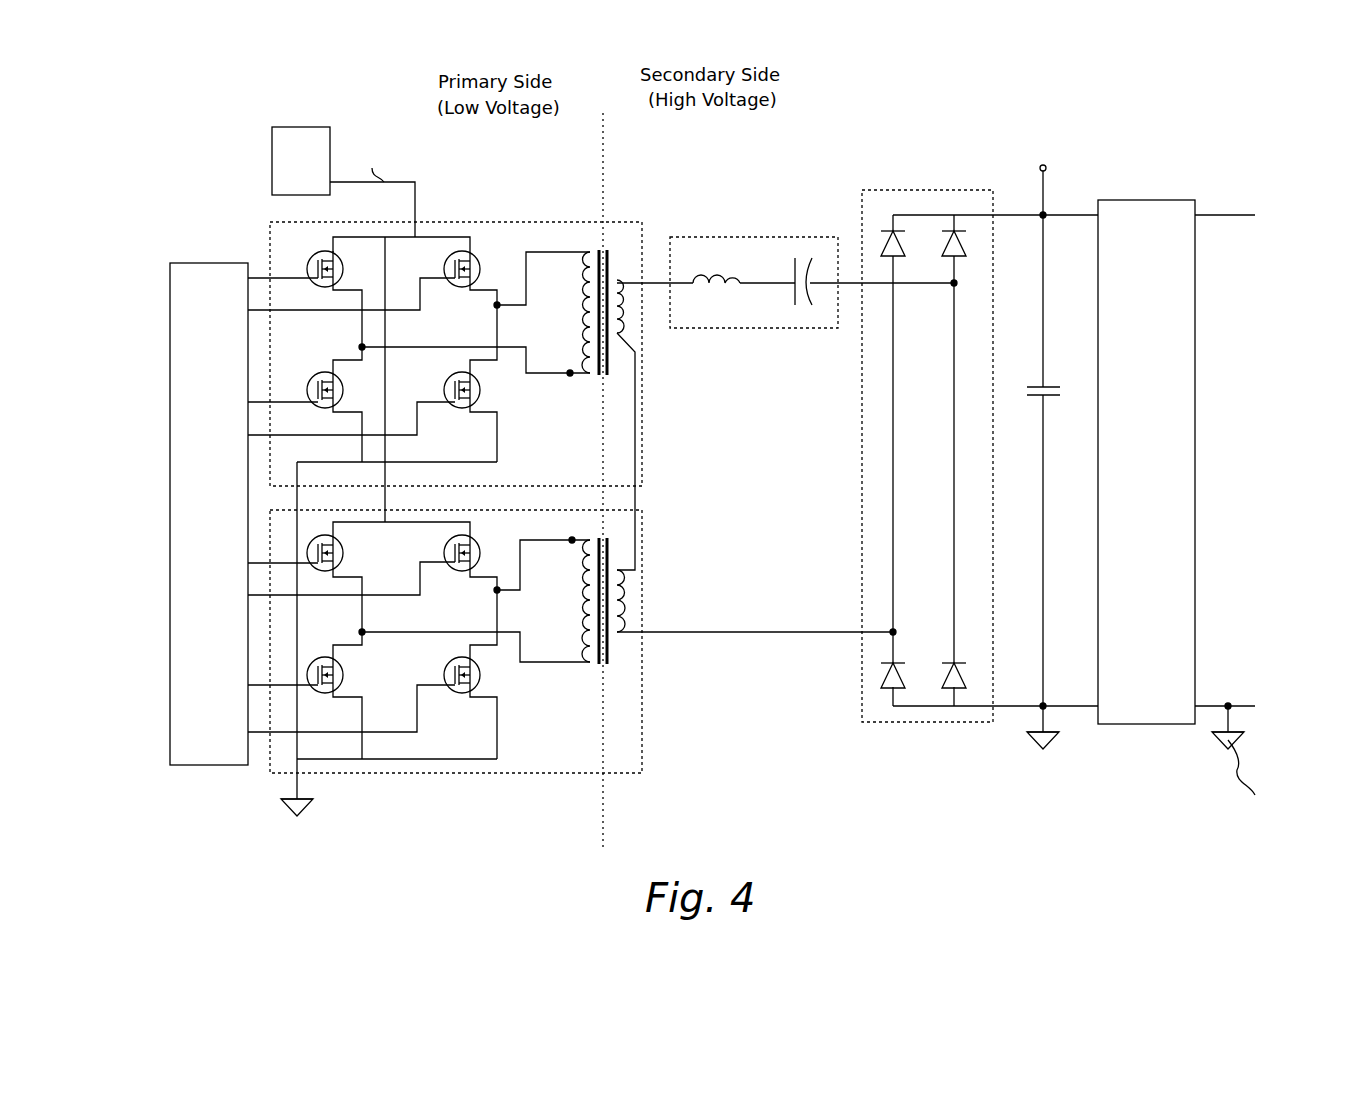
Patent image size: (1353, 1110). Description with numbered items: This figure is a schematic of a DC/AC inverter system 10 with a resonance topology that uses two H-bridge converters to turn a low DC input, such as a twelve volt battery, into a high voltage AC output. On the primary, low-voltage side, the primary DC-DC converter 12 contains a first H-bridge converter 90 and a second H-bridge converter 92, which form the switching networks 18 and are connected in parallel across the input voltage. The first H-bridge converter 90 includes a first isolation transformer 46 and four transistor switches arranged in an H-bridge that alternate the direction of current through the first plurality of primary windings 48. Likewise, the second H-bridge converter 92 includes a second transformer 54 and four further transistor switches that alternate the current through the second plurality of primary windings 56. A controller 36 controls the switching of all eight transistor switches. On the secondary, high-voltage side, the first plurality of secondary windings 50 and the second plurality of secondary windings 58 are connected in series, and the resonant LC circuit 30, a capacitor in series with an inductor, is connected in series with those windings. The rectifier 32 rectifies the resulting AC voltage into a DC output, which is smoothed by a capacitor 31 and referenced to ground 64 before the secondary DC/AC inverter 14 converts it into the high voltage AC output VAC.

The DC/AC inverter system 10 is at (1040, 58).
The primary DC-DC converter 12 is at (415, 816).
The secondary DC/AC inverter 14 is at (1149, 351).
The switching networks 18 is at (313, 169).
The resonant LC circuit 30 is at (731, 238).
The capacitor 31 is at (1050, 385).
The rectifier 32 is at (915, 195).
The controller 36 is at (220, 461).
The first isolation transformer 46 is at (655, 371).
The first plurality of primary windings 48 is at (592, 250).
The first plurality of secondary windings 50 is at (618, 276).
The second isolation transformer 54 is at (719, 674).
The second plurality of primary windings 56 is at (590, 662).
The second plurality of secondary windings 58 is at (623, 604).
The ground 64 is at (1043, 740).
The first H-bridge converter 90 is at (268, 235).
The second H-bridge converter 92 is at (272, 771).